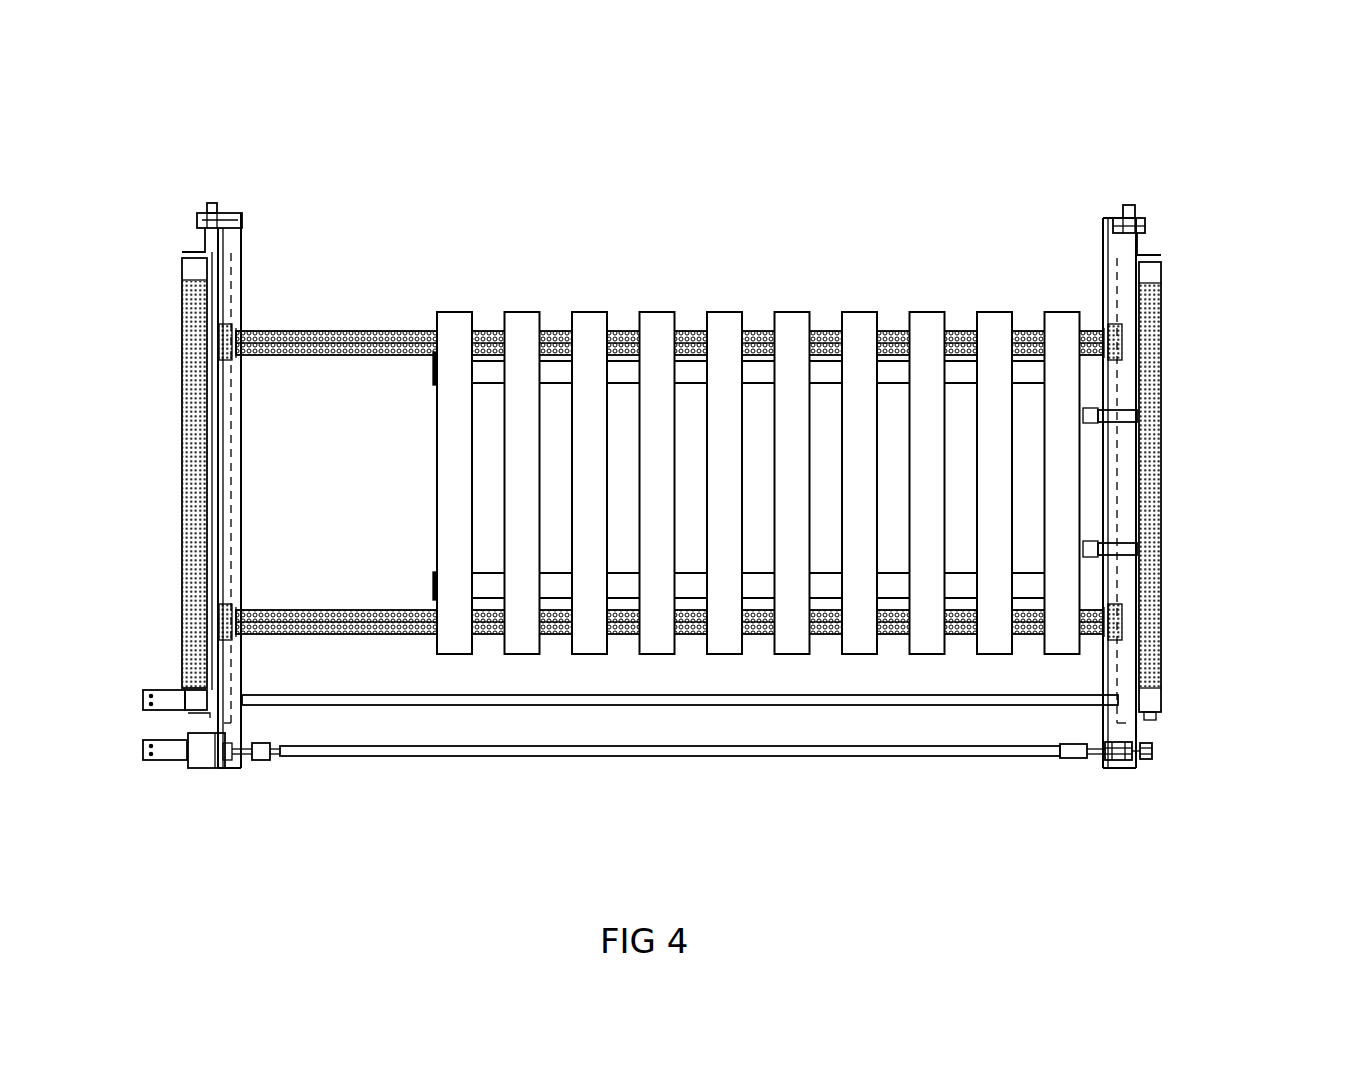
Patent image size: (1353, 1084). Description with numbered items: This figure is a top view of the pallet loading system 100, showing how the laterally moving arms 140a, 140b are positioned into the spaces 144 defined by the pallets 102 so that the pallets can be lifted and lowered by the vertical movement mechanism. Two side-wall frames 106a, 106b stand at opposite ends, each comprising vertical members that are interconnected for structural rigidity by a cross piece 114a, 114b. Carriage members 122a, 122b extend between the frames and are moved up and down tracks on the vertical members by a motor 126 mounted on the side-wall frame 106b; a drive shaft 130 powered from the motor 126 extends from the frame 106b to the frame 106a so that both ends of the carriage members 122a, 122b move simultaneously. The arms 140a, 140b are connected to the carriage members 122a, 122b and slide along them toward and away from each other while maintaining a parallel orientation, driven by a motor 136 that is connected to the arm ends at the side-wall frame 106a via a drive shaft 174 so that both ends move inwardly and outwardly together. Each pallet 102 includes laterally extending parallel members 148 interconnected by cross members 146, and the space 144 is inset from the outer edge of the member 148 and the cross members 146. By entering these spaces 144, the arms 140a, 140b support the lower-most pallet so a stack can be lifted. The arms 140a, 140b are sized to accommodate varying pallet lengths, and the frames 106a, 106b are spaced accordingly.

The pallet loading system 100 is at (688, 225).
The pallet 102 is at (686, 391).
The side-wall frame 106a is at (1230, 476).
The side-wall frame 106b is at (141, 459).
The cross piece 114a is at (1230, 476).
The cross piece 114b is at (141, 459).
The carriage member 122a is at (1188, 787).
The carriage member 122b is at (269, 191).
The motor 126 is at (145, 670).
The drive shaft 130 is at (680, 759).
The motor 136 is at (157, 775).
The laterally moving arm 140a is at (669, 597).
The laterally moving arm 140b is at (669, 306).
The space 144 is at (686, 515).
The cross member 146 is at (758, 315).
The laterally extending parallel member 148 is at (503, 443).
The drive shaft 174 is at (664, 783).